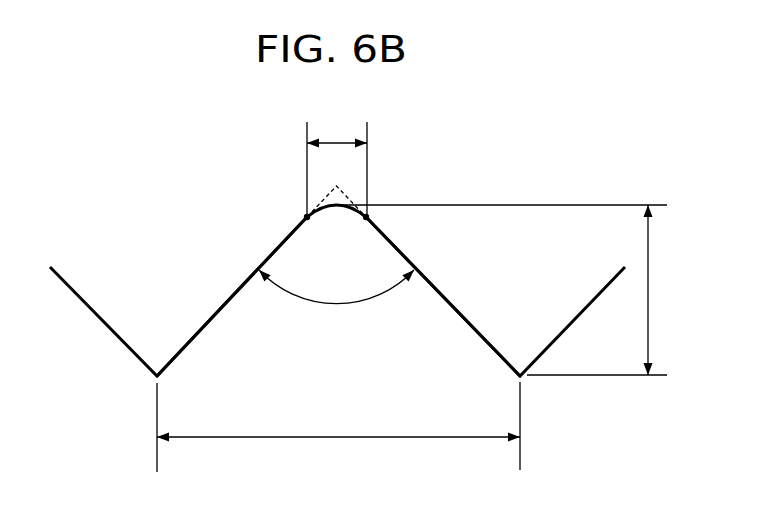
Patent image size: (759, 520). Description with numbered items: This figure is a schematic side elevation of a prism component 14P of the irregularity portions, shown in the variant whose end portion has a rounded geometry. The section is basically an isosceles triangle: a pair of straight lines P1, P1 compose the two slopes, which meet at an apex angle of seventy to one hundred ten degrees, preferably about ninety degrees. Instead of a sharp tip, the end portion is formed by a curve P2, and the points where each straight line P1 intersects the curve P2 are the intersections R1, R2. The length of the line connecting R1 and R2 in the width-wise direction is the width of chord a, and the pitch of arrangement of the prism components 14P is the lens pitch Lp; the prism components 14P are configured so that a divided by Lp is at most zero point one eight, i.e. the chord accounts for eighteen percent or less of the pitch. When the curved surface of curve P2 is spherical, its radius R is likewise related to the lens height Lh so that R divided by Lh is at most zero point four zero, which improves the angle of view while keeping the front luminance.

The prism component 14P is at (202, 330).
The straight lines composing the slopes P1 is at (250, 277).
The curve composing the end portion P2 is at (343, 202).
The intersection R1 is at (307, 217).
The intersection R2 is at (366, 217).
The width of chord a is at (337, 162).
The lens height Lh is at (512, 290).
The lens pitch Lp is at (338, 430).